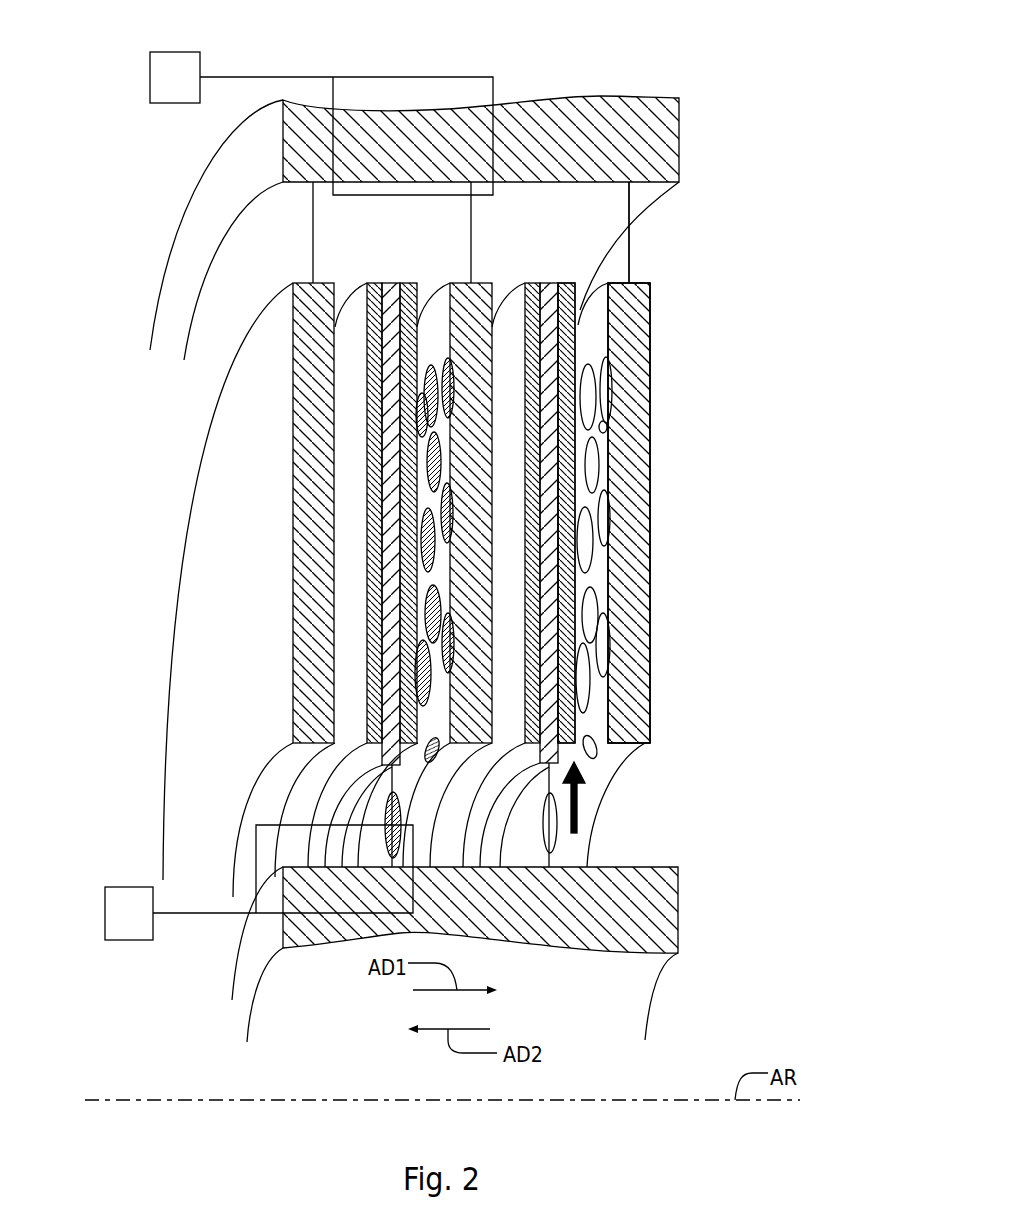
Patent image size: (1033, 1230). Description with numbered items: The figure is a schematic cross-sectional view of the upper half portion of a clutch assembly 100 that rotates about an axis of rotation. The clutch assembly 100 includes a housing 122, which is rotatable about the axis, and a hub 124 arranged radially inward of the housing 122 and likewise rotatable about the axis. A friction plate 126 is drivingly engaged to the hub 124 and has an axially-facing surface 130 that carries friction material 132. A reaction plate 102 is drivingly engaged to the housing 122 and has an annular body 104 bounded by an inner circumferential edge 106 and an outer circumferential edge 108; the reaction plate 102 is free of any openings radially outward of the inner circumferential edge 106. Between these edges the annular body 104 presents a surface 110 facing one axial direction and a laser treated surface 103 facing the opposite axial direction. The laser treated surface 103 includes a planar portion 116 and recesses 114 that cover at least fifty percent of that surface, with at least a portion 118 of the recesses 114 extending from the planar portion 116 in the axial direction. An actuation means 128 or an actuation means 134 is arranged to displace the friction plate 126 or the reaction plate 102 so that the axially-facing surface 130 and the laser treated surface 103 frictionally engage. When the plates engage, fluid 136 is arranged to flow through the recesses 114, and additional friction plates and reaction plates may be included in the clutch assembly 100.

The clutch assembly 100 is at (725, 190).
The reaction plate 102 is at (661, 338).
The laser treated surface 103 is at (606, 428).
The annular body 104 is at (661, 380).
The inner circumferential edge 106 is at (637, 746).
The outer circumferential edge 108 is at (650, 283).
The surface 110 is at (650, 462).
The recesses 114 is at (597, 555).
The planar portion 116 is at (584, 318).
The portion of recesses 118 is at (613, 663).
The housing 122 is at (578, 88).
The hub 124 is at (681, 892).
The friction plate 126 is at (566, 495).
The actuation means 128 is at (144, 927).
The axially-facing surface 130 is at (570, 304).
The friction material 132 is at (572, 720).
The actuation means 134 is at (190, 91).
The fluid 136 is at (578, 806).